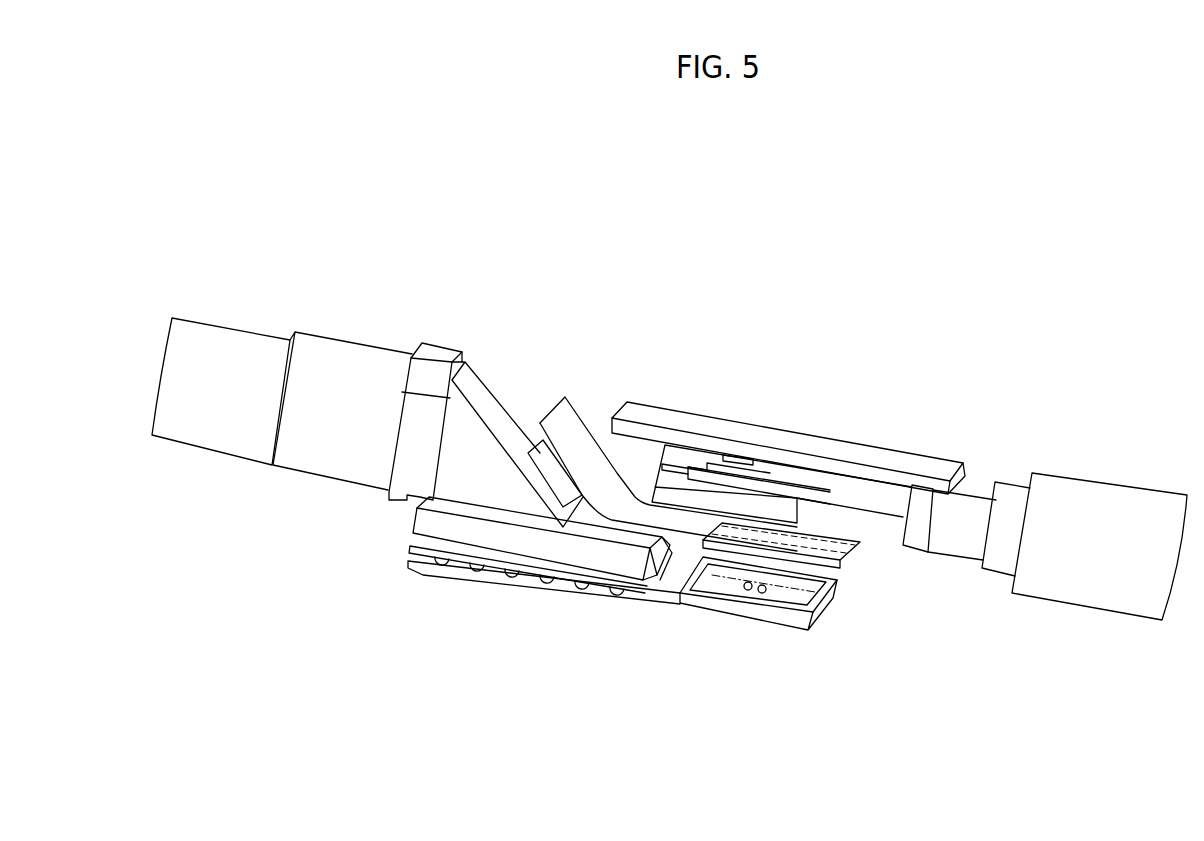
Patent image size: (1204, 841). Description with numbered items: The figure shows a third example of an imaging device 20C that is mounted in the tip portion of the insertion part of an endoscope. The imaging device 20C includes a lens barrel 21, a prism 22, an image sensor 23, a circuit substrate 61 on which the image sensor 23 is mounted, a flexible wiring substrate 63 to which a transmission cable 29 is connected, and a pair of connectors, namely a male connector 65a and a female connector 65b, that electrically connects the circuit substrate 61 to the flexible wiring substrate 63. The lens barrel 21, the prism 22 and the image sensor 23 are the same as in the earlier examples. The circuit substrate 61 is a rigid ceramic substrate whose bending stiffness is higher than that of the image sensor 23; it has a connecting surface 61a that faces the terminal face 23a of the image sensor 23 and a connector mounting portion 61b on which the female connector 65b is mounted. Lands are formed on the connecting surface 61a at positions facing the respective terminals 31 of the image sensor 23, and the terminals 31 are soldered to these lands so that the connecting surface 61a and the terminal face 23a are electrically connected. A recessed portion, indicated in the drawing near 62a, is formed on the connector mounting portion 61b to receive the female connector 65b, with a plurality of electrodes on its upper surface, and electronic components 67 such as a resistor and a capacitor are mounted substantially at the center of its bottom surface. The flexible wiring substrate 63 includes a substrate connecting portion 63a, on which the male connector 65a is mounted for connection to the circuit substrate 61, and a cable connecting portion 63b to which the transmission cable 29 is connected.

The imaging device 20C is at (531, 224).
The lens barrel 21 is at (336, 345).
The prism 22 is at (488, 390).
The image sensor 23 is at (422, 522).
The terminal face 23a is at (413, 548).
The transmission cable 29 is at (1068, 497).
The terminals 31 is at (442, 566).
The circuit substrate 61 is at (838, 606).
The connecting surface 61a is at (663, 578).
The connector mounting portion 61b is at (692, 600).
The groove 62a is at (720, 582).
The flexible wiring substrate 63 is at (862, 553).
The substrate connecting portion 63a is at (850, 562).
The cable connecting portion 63b is at (683, 455).
The male connector 65a is at (787, 590).
The female connector 65b is at (815, 610).
The electronic components 67 is at (762, 594).